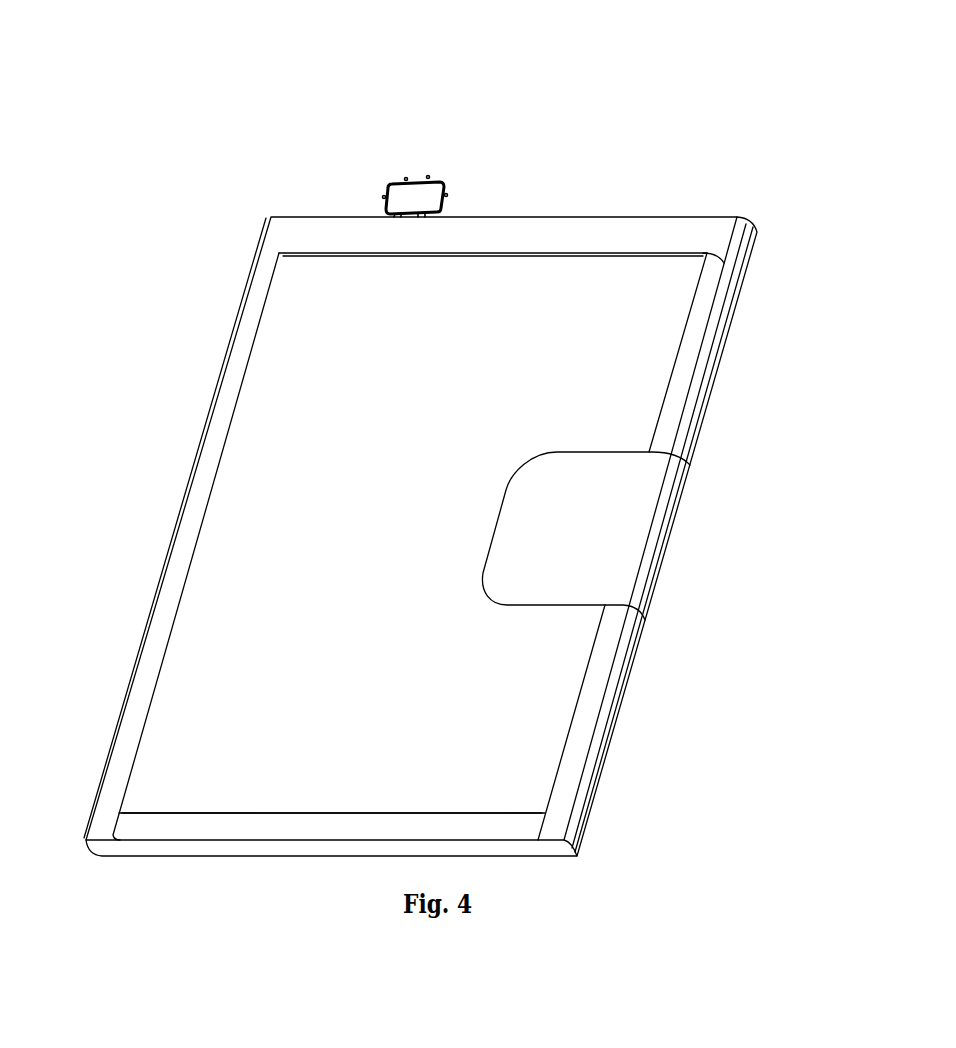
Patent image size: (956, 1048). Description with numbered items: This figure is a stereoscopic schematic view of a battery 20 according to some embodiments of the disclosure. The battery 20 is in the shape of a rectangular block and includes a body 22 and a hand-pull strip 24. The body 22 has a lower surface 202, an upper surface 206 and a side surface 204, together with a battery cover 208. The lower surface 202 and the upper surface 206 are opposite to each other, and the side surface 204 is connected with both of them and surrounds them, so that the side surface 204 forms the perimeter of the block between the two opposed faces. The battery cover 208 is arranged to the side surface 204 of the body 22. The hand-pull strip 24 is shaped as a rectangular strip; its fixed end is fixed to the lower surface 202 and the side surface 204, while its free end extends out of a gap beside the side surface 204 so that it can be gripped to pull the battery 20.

The battery 20 is at (478, 87).
The lower surface 202 is at (436, 499).
The side surface 204 is at (162, 572).
The upper surface 206 is at (675, 275).
The battery cover 208 is at (285, 237).
The body 22 is at (476, 534).
The hand-pull strip 24 is at (645, 536).